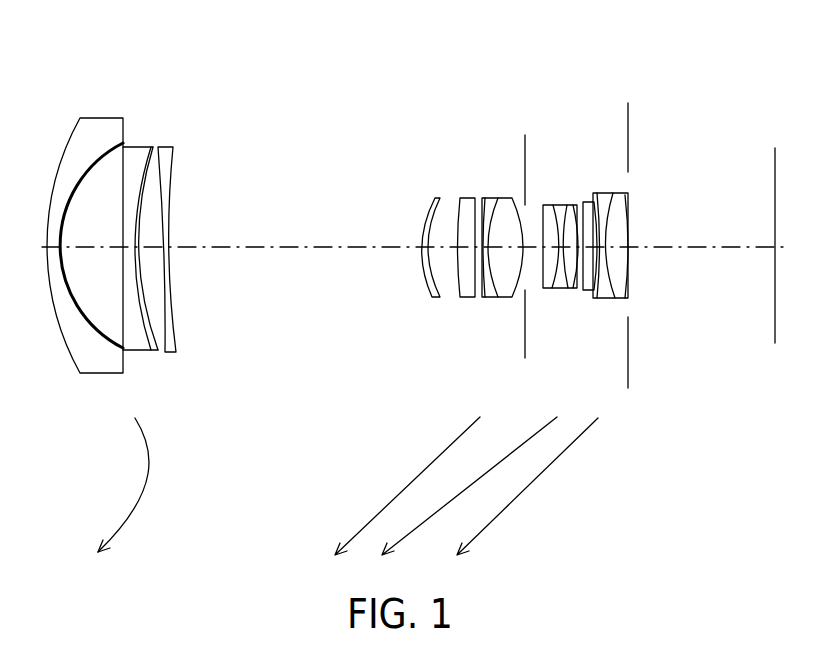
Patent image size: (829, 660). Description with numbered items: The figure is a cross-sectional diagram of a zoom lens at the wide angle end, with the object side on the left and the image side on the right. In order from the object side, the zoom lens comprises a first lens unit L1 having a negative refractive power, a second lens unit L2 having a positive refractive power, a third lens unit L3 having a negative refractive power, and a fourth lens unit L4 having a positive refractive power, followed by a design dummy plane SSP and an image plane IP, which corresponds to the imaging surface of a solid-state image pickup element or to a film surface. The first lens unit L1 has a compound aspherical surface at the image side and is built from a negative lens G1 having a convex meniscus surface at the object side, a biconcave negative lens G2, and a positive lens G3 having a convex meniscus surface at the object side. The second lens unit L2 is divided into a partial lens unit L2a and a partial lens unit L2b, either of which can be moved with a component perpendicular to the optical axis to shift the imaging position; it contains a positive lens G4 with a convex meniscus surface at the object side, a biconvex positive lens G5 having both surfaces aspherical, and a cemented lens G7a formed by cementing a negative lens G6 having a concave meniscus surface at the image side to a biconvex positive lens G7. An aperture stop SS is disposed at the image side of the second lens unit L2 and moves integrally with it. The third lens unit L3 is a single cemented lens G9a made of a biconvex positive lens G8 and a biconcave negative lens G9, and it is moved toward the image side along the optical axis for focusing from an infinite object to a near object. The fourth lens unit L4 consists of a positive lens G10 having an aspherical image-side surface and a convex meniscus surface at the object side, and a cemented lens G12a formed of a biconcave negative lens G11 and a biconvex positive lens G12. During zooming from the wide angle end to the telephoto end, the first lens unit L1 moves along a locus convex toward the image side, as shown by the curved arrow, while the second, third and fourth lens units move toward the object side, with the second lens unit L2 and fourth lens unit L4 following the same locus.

The first lens unit L1 is at (180, 63).
The second lens unit L2 is at (530, 64).
The partial lens unit L2a is at (438, 108).
The partial lens unit L2b is at (443, 108).
The third lens unit L3 is at (578, 64).
The fourth lens unit L4 is at (632, 64).
The negative lens G1 is at (92, 135).
The negative lens G2 is at (133, 148).
The positive lens G3 is at (170, 150).
The positive lens G4 is at (427, 213).
The positive lens G5 is at (458, 197).
The negative lens G6 is at (485, 197).
The positive lens G7 is at (508, 198).
The cemented lens G7a is at (520, 137).
The positive lens G8 is at (550, 287).
The negative lens G9 is at (570, 287).
The cemented lens G9a is at (517, 385).
The positive lens G10 is at (587, 203).
The negative lens G11 is at (613, 192).
The positive lens G12 is at (622, 223).
The cemented lens G12a is at (687, 157).
The aperture stop SS is at (527, 163).
The design dummy plane SSP is at (628, 373).
The image plane IP is at (775, 215).